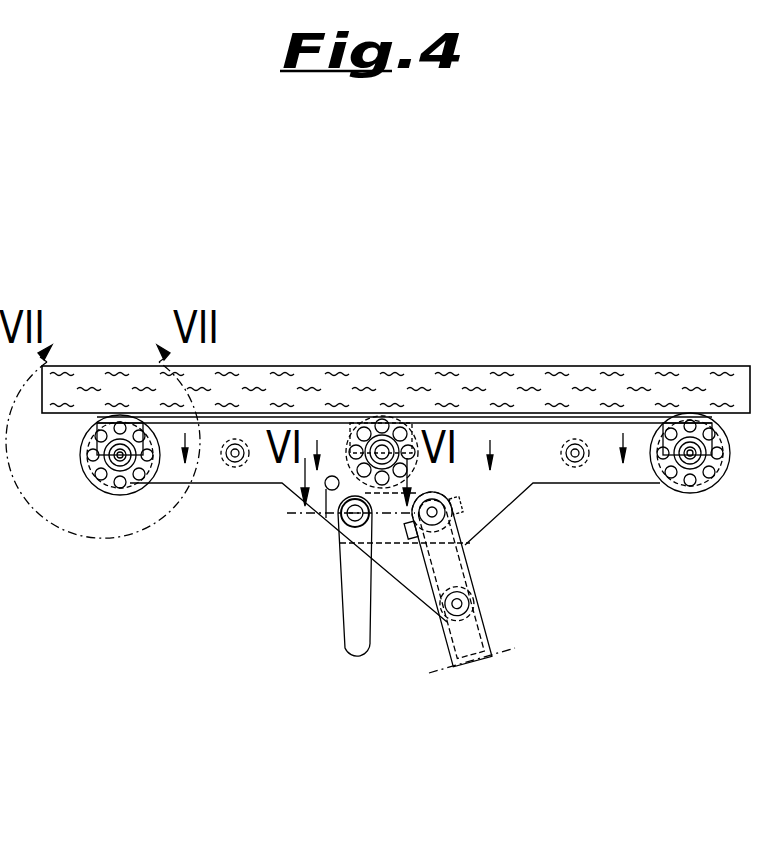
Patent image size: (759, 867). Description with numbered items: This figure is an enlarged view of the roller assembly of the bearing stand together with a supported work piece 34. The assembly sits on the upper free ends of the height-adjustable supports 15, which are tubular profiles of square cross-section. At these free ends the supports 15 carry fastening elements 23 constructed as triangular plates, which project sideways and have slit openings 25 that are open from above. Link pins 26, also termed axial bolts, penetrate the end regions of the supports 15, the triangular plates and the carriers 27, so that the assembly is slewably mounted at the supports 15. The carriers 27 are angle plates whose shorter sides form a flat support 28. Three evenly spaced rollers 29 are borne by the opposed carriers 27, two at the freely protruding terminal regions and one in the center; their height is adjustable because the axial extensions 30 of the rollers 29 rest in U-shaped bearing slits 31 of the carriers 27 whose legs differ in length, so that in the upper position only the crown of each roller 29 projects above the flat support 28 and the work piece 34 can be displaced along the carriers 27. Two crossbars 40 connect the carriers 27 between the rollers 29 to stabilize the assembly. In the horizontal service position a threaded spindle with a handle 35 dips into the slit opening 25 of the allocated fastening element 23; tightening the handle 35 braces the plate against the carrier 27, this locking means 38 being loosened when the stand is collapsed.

The support 15 is at (470, 643).
The fastening element 23 is at (455, 567).
The slit opening 25 is at (357, 493).
The link pin 26 is at (430, 522).
The carrier 27 is at (502, 460).
The flat support 28 is at (610, 417).
The roller 29 is at (362, 422).
The axial extension 30 is at (122, 457).
The bearing slit 31 is at (147, 447).
The work piece 34 is at (377, 387).
The handle 35 is at (360, 625).
The locking means 38 is at (335, 557).
The crossbar 40 is at (234, 460).